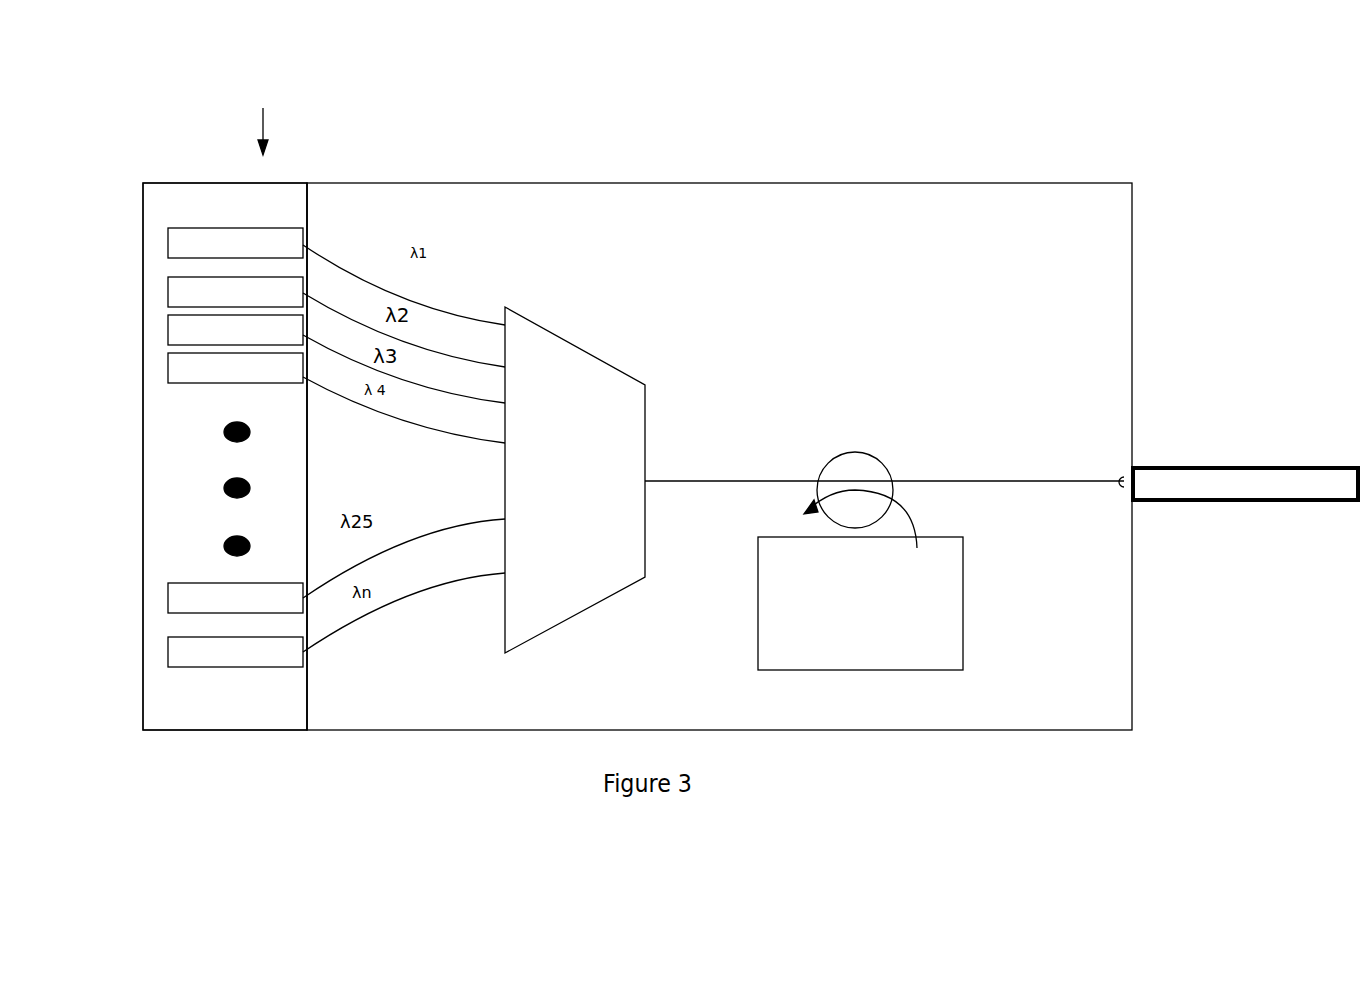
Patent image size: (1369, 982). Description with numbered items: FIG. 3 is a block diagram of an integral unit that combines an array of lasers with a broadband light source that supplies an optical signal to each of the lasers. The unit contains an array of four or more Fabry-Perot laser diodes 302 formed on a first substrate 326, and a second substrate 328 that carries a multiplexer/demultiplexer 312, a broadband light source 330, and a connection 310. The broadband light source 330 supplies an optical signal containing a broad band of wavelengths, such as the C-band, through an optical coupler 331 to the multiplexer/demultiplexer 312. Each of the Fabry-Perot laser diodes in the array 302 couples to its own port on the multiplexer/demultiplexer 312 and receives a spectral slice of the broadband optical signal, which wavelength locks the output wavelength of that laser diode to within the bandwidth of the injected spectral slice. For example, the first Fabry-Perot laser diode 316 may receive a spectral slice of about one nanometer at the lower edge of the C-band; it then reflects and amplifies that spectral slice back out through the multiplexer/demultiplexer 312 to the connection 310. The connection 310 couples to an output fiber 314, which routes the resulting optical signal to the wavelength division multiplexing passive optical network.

The Fabry-Perot laser diodes 302 is at (205, 178).
The first Fabry-Perot laser diode 316 is at (131, 235).
The first substrate 326 is at (269, 712).
The multiplexer/demultiplexer 312 is at (593, 566).
The optical coupler 331 is at (850, 410).
The broadband light source 330 is at (928, 647).
The connection 310 is at (1103, 454).
The output fiber 314 is at (1293, 434).
The second substrate 328 is at (1059, 704).